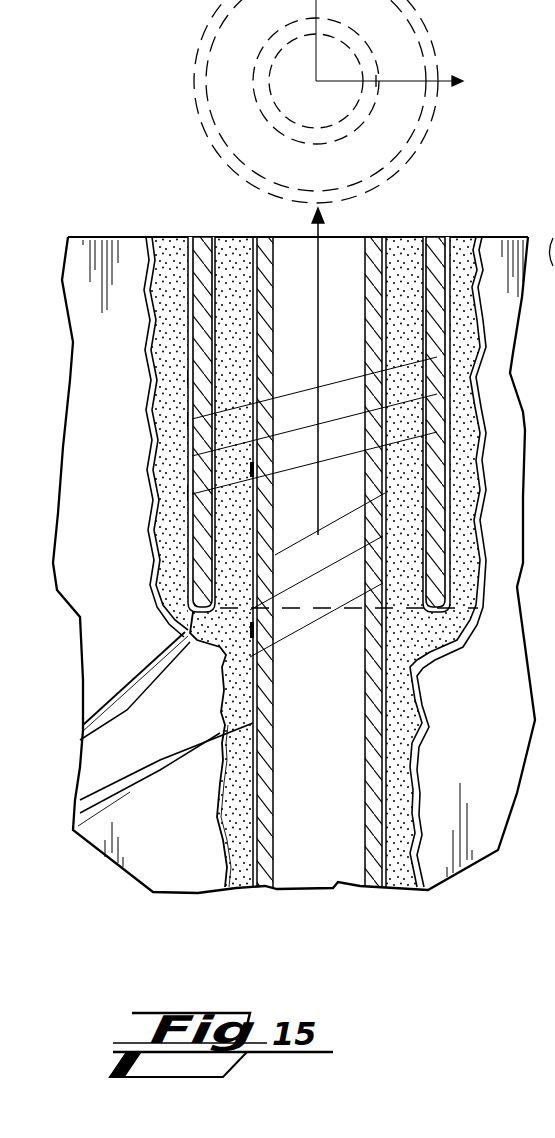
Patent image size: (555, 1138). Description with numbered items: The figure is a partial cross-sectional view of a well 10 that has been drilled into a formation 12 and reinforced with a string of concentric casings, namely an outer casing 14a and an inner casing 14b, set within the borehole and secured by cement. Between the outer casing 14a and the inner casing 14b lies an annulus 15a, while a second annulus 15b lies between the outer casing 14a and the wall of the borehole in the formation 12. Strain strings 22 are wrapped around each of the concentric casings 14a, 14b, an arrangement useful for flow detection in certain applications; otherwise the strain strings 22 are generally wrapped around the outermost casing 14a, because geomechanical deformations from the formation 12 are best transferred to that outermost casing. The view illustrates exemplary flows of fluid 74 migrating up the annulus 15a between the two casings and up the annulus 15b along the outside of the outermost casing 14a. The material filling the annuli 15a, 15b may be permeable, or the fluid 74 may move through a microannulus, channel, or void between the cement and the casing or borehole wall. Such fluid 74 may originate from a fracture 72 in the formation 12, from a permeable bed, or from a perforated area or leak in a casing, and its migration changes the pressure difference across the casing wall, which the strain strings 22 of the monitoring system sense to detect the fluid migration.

The well 10 is at (365, 222).
The formation 12 is at (116, 513).
The outer casing 14a is at (438, 283).
The inner casing 14b is at (263, 278).
The annulus 15a is at (227, 257).
The annulus 15b is at (170, 408).
The strain strings 22 is at (343, 375).
The fracture 72 is at (128, 677).
The fluid 74 is at (145, 672).